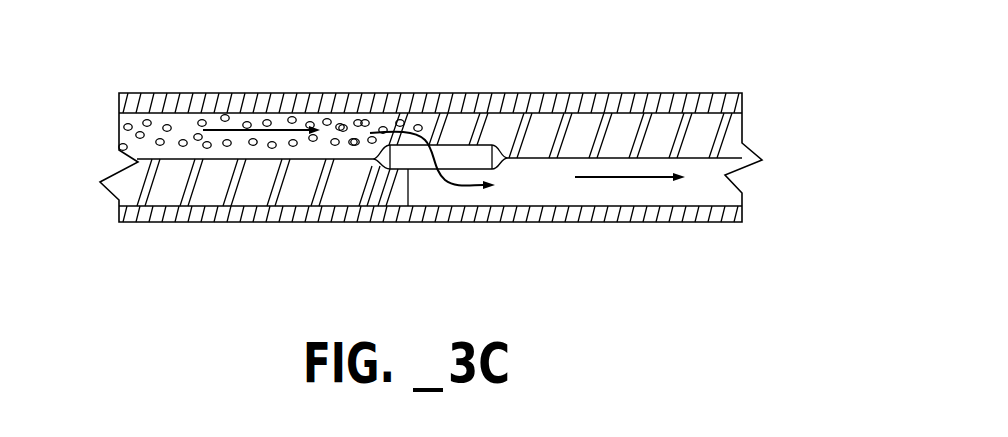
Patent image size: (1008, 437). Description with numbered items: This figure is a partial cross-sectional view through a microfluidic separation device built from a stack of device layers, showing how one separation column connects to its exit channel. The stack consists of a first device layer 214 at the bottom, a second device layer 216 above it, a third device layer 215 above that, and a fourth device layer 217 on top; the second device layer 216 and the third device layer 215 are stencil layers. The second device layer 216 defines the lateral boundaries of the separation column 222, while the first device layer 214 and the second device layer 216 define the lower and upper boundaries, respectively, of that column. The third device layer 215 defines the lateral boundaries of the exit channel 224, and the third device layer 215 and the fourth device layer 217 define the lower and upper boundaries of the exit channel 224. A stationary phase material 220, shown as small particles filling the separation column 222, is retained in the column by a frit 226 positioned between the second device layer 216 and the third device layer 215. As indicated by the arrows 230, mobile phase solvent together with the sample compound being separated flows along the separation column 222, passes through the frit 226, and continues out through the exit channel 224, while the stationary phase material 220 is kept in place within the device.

The first device layer 214 is at (735, 212).
The third device layer 215 is at (127, 187).
The second device layer 216 is at (708, 135).
The fourth device layer 217 is at (725, 98).
The stationary phase material 220 is at (419, 125).
The separation column 222 is at (167, 126).
The exit channel 224 is at (647, 201).
The frit 226 is at (484, 141).
The arrows 230 is at (575, 177).